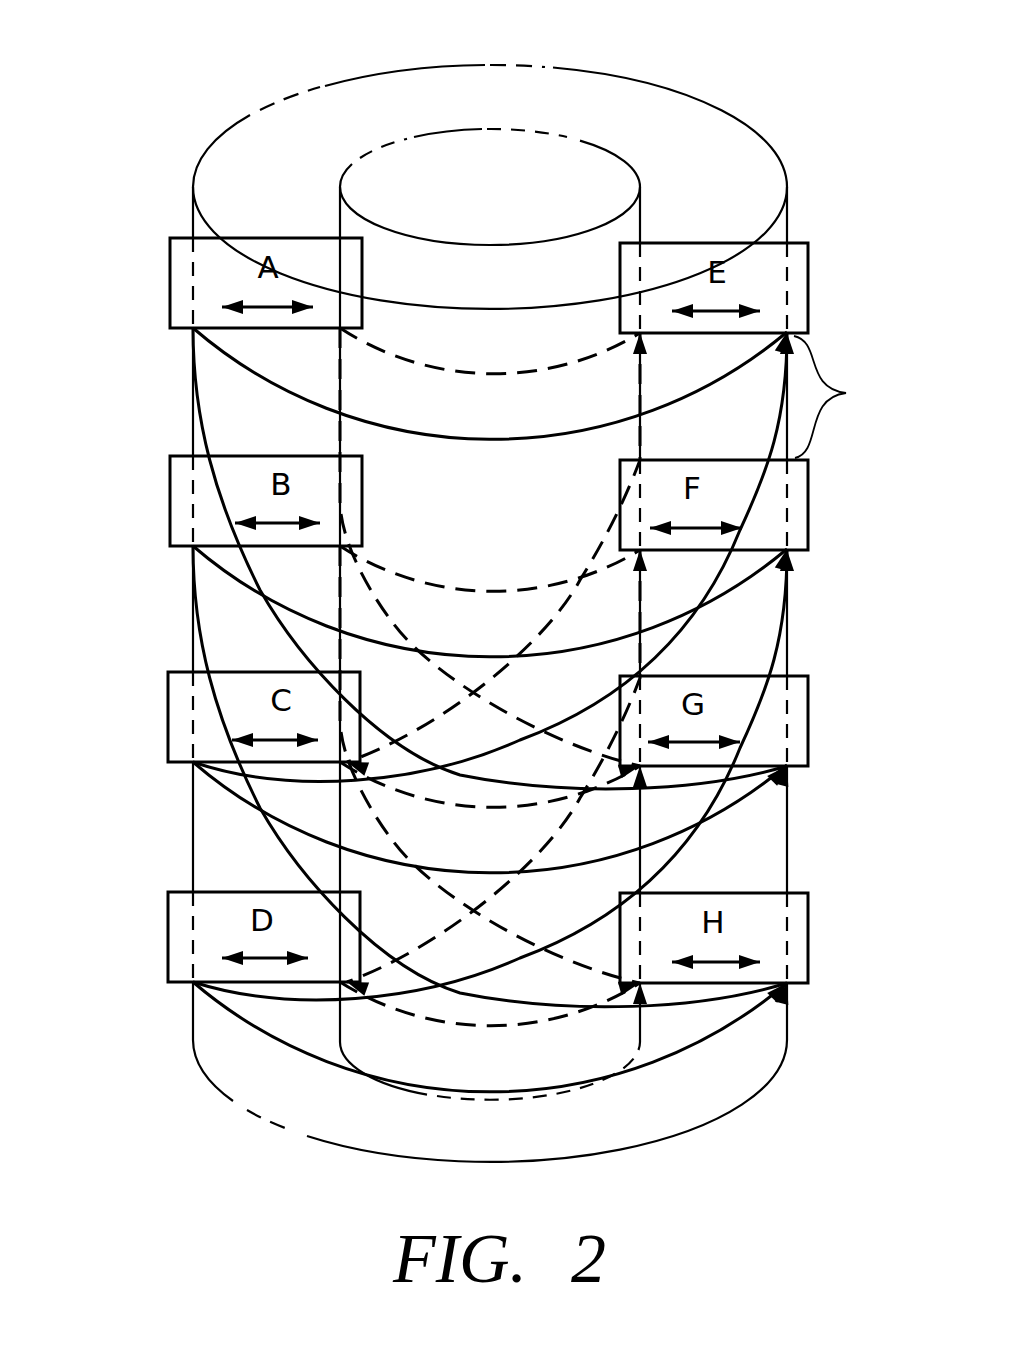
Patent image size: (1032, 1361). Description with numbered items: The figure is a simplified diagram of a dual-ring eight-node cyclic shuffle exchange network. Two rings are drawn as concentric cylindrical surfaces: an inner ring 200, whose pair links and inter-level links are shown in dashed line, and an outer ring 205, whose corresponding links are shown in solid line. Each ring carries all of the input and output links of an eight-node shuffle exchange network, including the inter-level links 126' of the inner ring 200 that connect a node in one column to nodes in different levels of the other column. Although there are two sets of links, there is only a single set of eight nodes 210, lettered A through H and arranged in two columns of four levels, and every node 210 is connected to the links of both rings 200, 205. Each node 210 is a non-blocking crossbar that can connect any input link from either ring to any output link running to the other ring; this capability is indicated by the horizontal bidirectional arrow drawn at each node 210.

The inner ring 200 is at (622, 157).
The outer ring 205 is at (766, 146).
The node 210 is at (846, 393).
The inter-level links of the inner ring 126' is at (491, 662).